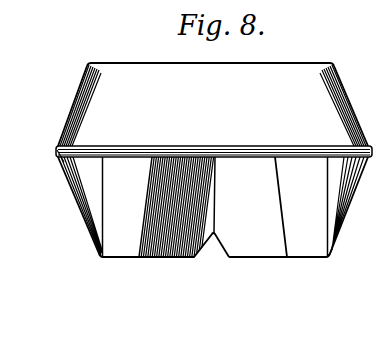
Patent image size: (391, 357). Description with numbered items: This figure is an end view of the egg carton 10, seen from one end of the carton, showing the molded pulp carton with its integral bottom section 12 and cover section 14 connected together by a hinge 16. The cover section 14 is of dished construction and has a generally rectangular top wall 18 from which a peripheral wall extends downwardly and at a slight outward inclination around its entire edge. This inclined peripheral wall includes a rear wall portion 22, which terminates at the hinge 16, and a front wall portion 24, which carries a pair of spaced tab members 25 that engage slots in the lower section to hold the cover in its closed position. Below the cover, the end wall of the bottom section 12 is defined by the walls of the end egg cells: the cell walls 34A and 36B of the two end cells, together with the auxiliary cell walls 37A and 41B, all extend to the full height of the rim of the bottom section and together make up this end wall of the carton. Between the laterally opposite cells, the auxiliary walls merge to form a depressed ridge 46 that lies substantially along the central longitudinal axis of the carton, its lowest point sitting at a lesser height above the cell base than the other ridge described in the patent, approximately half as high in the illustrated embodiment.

The egg carton 10 is at (305, 61).
The bottom section 12 is at (80, 198).
The cover section 14 is at (352, 100).
The hinge 16 is at (371, 152).
The top wall 18 is at (213, 93).
The rear wall portion 22 is at (352, 128).
The front wall portion 24 is at (78, 96).
The tab members 25 is at (60, 156).
The cell wall 34A is at (149, 258).
The cell wall 36B is at (258, 207).
The auxiliary cell wall 37A is at (126, 207).
The auxiliary cell wall 41B is at (308, 228).
The depressed ridge 46 is at (213, 199).